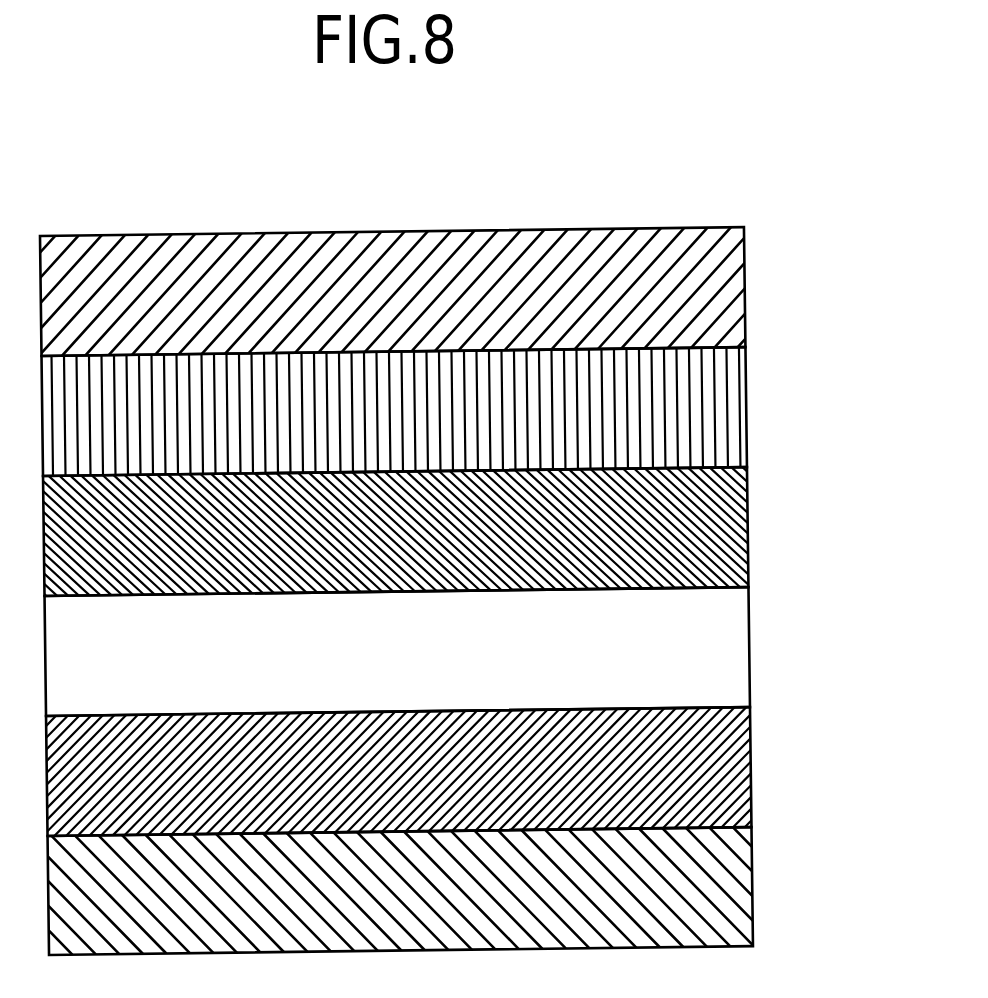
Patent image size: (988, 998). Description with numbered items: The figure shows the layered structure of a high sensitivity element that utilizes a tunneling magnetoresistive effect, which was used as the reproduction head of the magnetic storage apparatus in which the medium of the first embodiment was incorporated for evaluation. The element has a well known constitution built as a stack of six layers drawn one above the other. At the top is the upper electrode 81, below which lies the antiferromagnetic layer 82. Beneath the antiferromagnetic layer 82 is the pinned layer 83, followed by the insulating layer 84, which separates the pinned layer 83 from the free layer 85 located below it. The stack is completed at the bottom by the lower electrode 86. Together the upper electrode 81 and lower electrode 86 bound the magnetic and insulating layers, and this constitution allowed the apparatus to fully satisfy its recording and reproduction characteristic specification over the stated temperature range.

The upper electrode 81 is at (705, 282).
The antiferromagnetic layer 82 is at (710, 403).
The pinned layer 83 is at (710, 522).
The insulating layer 84 is at (710, 642).
The free layer 85 is at (717, 755).
The lower electrode 86 is at (718, 877).